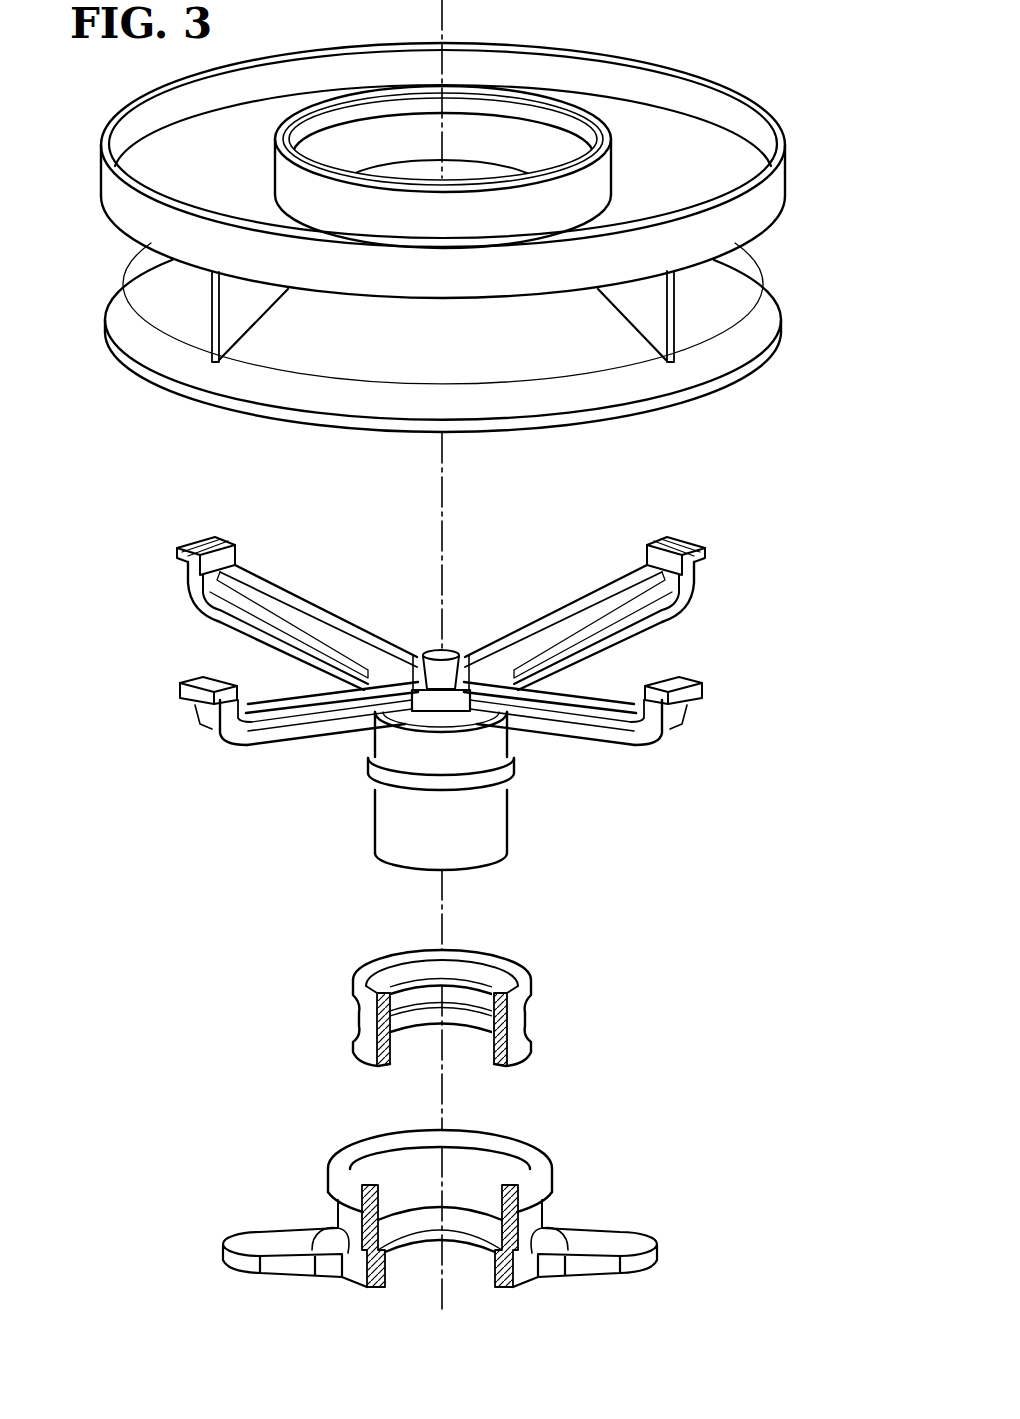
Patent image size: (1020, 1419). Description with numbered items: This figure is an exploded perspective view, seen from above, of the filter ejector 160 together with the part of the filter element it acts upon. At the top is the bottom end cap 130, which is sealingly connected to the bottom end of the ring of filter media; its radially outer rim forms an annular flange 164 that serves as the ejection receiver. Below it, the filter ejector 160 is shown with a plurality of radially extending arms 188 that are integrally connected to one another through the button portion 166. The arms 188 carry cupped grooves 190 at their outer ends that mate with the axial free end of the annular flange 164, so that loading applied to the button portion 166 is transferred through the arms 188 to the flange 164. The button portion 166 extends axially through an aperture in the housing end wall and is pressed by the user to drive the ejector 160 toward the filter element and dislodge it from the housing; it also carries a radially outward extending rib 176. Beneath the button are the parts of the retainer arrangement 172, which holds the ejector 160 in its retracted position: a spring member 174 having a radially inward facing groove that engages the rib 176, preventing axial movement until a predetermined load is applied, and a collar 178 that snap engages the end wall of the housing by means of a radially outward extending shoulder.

The bottom end cap 130 is at (775, 189).
The annular flange 164 is at (762, 318).
The filter ejector 160 is at (468, 874).
The radially extending arms 188 is at (441, 603).
The cupped grooves 190 is at (672, 531).
The button portion 166 is at (492, 826).
The radially outward extending rib 176 is at (516, 762).
The retainer arrangement 172 is at (370, 1112).
The spring member 174 is at (514, 1027).
The collar 178 is at (440, 1208).